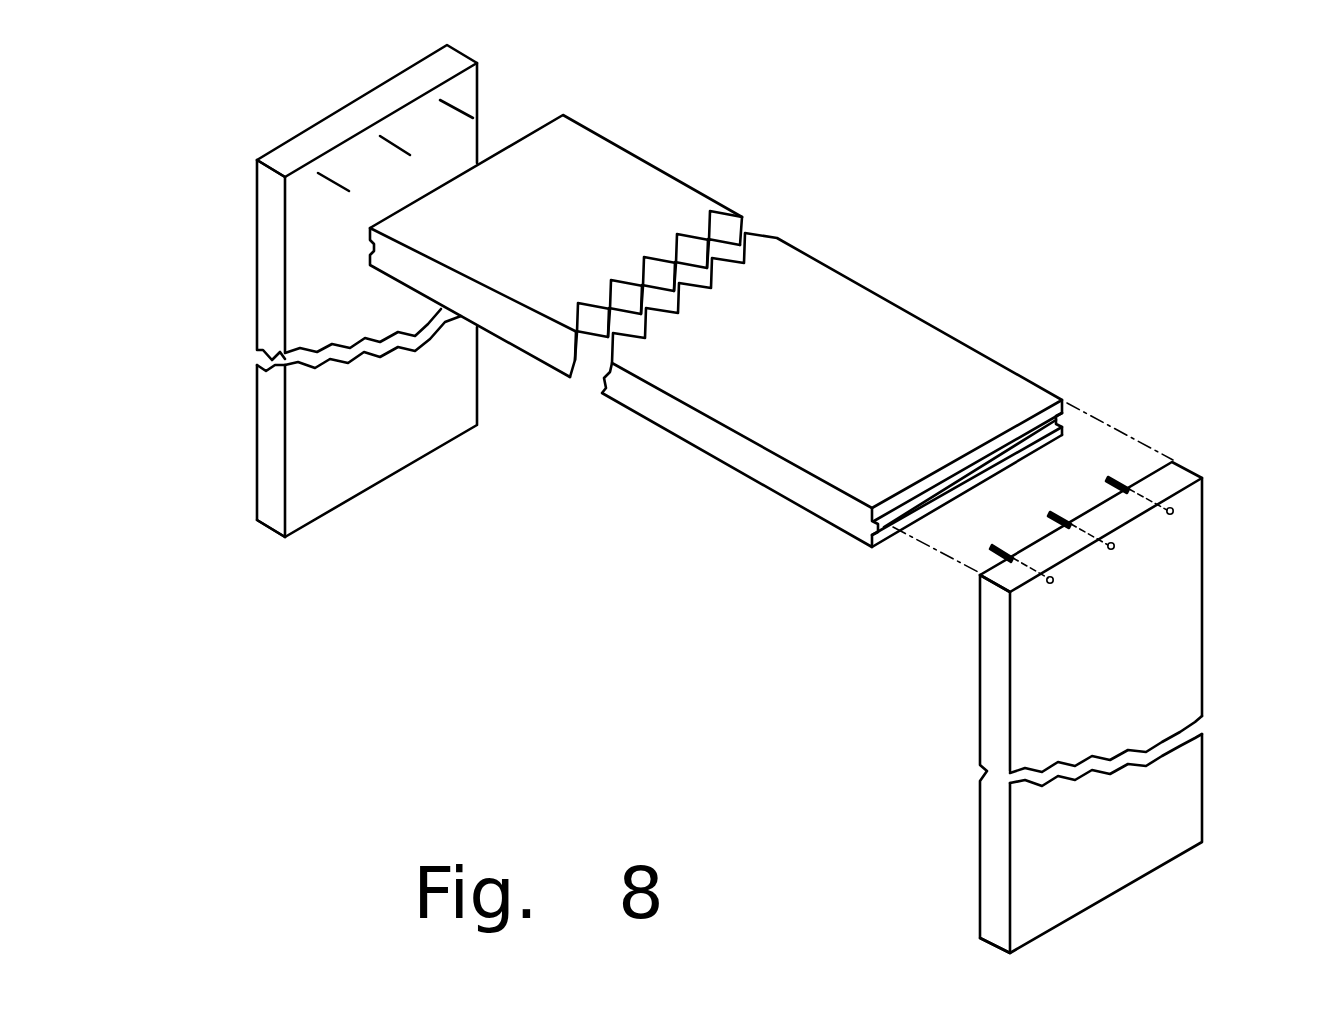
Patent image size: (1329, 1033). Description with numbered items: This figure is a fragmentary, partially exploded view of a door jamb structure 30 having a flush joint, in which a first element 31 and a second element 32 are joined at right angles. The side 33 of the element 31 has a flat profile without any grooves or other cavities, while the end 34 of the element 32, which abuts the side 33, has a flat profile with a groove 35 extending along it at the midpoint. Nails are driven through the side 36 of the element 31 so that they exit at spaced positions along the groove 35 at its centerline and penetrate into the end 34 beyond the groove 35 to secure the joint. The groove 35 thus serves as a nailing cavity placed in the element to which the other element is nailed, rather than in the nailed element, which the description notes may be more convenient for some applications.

The door jamb structure 30 is at (827, 556).
The element 31 is at (729, 508).
The element 32 is at (716, 331).
The side 33 is at (663, 556).
The end 34 is at (799, 340).
The groove 35 is at (907, 506).
The side 36 is at (755, 318).